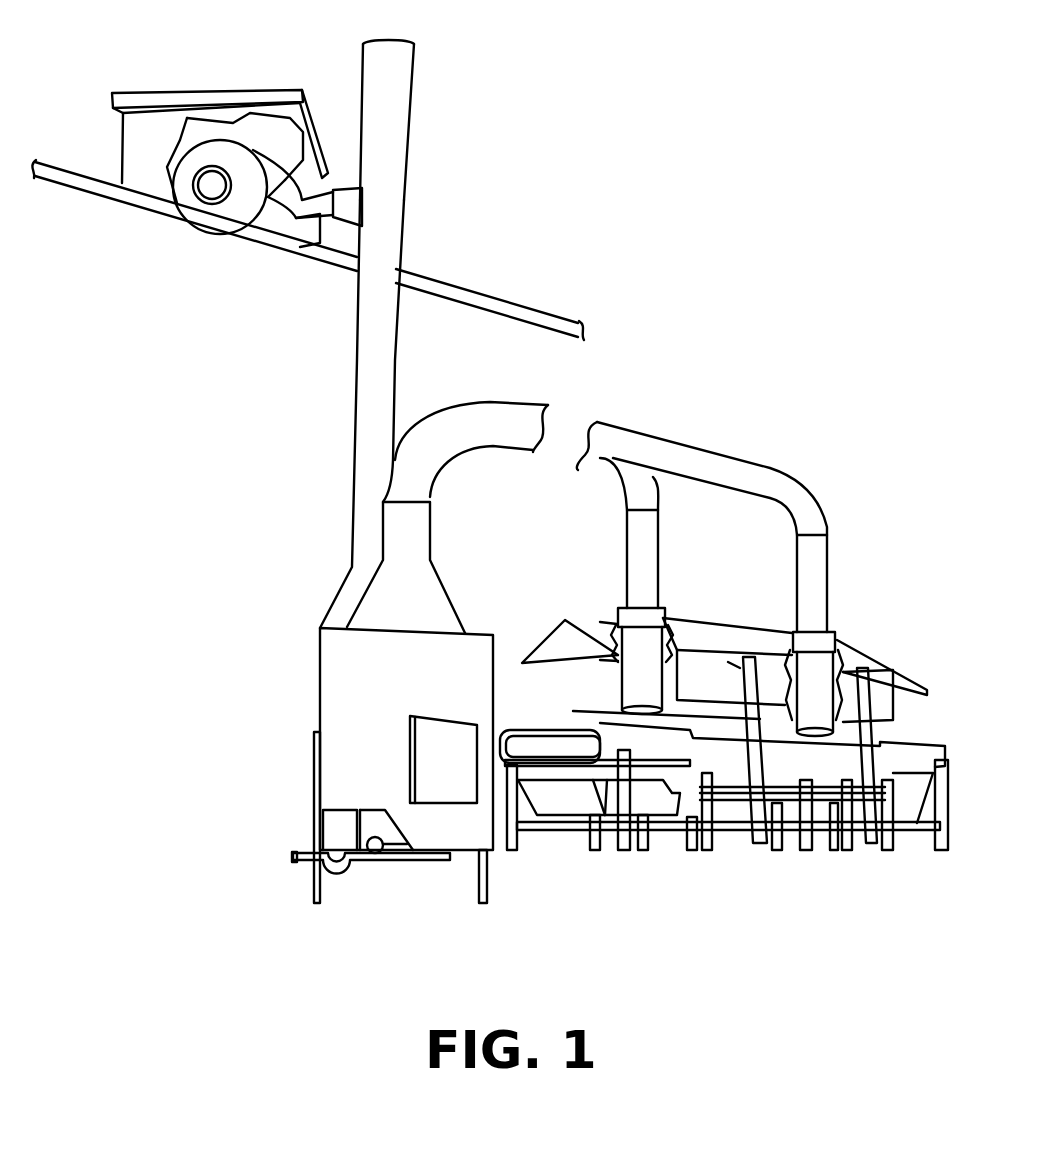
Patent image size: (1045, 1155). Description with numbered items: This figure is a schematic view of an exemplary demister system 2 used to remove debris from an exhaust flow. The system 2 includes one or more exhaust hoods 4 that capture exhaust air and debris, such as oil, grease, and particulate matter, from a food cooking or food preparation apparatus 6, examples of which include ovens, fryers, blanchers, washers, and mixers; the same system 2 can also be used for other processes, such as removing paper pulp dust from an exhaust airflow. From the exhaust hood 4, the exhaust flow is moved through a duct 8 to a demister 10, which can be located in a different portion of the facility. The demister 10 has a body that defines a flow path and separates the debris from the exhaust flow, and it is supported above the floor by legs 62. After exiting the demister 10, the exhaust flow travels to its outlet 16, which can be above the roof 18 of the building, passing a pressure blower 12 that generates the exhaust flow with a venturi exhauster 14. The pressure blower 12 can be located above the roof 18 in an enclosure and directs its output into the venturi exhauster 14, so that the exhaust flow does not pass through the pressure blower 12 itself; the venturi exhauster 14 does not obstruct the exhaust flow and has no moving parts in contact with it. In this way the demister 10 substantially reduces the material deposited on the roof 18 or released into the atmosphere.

The demister system 2 is at (292, 702).
The exhaust hood 4 is at (847, 660).
The food cooking or food preparation apparatus 6 is at (722, 773).
The duct 8 is at (697, 465).
The demister 10 is at (338, 756).
The pressure blower 12 is at (240, 208).
The venturi exhauster 14 is at (392, 190).
The outlet 16 is at (398, 73).
The roof 18 is at (520, 312).
The legs 62 is at (314, 893).